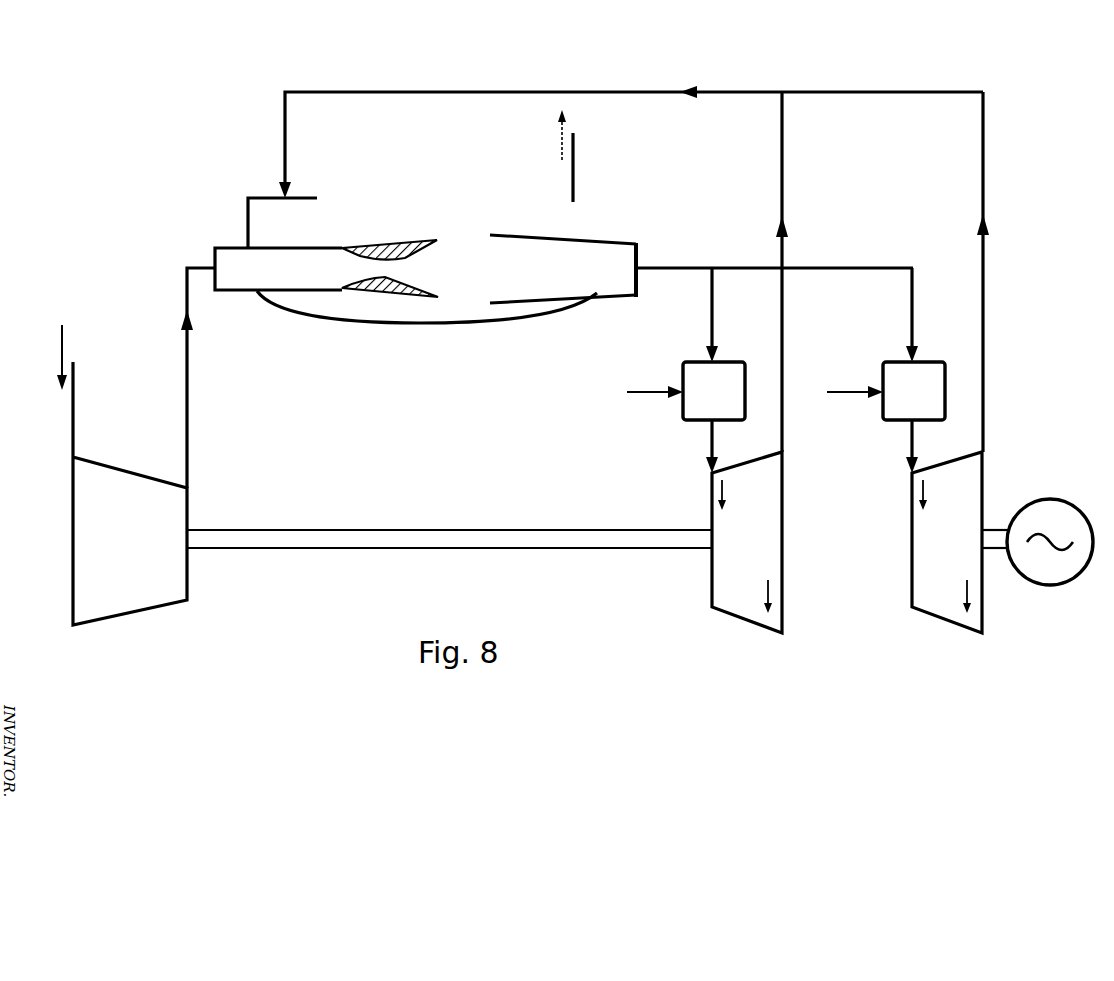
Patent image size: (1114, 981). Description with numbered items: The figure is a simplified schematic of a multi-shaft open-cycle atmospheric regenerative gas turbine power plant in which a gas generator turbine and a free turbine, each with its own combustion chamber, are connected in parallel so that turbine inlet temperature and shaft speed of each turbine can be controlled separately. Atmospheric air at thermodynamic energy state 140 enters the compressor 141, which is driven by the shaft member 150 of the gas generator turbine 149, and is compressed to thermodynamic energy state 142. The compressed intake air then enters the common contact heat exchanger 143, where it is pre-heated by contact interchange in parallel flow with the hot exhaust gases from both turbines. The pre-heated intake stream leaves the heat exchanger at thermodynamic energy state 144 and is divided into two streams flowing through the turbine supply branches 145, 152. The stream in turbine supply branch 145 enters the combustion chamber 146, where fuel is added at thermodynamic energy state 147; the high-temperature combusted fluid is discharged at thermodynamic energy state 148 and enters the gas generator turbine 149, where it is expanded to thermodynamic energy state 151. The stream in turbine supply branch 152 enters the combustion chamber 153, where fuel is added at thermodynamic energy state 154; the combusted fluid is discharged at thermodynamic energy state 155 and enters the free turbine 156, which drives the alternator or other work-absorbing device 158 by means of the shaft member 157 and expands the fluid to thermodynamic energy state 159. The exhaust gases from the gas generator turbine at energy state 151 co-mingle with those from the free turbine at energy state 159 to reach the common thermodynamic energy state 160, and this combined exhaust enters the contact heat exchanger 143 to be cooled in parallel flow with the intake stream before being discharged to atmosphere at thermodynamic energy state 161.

The thermodynamic energy state of atmospheric air 140 is at (65, 413).
The compressor 141 is at (146, 551).
The thermodynamic energy state of compressed intake air 142 is at (177, 405).
The common contact heat exchanger 143 is at (460, 323).
The thermodynamic energy state of pre-heated intake fluid 144 is at (662, 273).
The turbine supply branch 145 is at (717, 323).
The combustion chamber 146 is at (731, 403).
The thermodynamic energy state of fuel addition 147 is at (645, 398).
The thermodynamic energy state of combusted fluid 148 is at (720, 438).
The gas generator turbine 149 is at (763, 552).
The shaft member 150 is at (427, 528).
The thermodynamic energy state of gas generator turbine exhaust 151 is at (773, 422).
The turbine supply branch 152 is at (825, 277).
The combustion chamber 153 is at (931, 403).
The thermodynamic energy state of fuel addition 154 is at (850, 400).
The thermodynamic energy state of combusted fluid 155 is at (918, 443).
The free turbine 156 is at (963, 552).
The shaft member 157 is at (995, 532).
The alternator or other work-absorbing device 158 is at (1070, 513).
The thermodynamic energy state of free turbine exhaust 159 is at (977, 327).
The common thermodynamic energy state of combined exhaust 160 is at (478, 100).
The thermodynamic energy state of discharged exhaust 161 is at (567, 173).